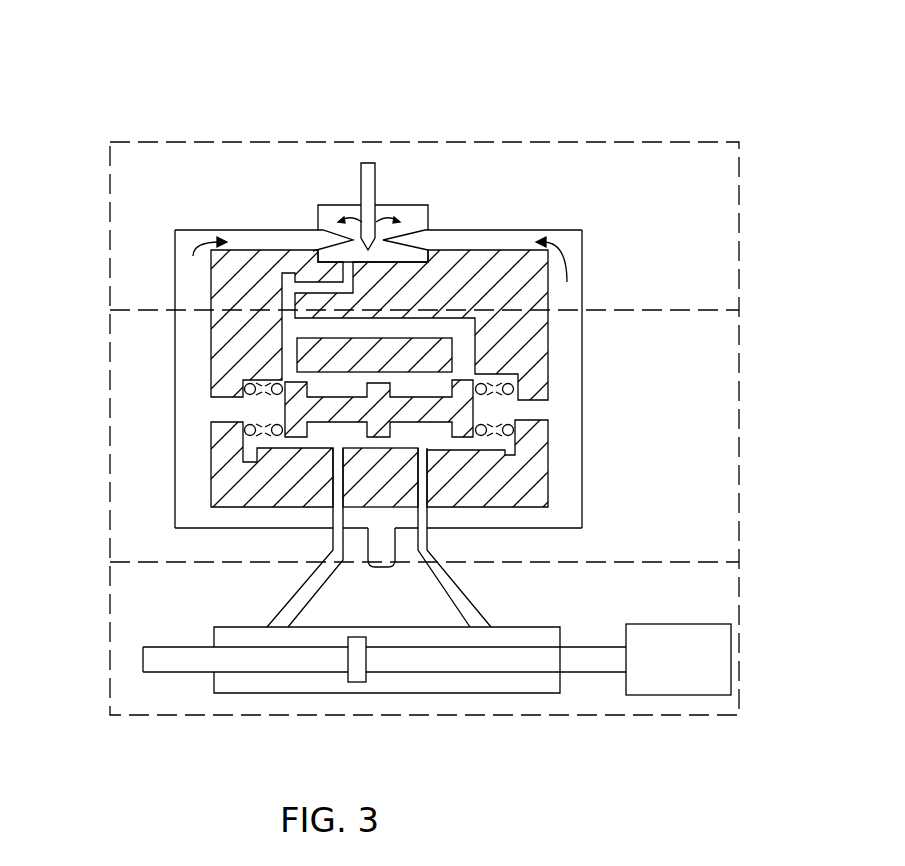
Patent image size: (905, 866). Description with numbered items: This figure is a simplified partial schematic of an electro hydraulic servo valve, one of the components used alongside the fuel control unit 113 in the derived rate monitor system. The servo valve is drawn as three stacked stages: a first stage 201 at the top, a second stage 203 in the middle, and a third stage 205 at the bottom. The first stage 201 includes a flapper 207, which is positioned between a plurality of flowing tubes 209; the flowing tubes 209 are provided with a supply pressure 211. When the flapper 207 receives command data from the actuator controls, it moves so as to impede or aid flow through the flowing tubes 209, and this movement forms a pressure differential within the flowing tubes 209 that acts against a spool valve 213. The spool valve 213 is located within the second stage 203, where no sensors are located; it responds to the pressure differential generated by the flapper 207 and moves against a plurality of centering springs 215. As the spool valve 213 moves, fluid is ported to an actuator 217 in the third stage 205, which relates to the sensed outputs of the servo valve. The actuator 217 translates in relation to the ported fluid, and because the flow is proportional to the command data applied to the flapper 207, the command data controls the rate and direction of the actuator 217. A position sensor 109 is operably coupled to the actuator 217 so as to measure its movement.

The fuel control unit 113 is at (611, 108).
The first stage 201 is at (110, 193).
The second stage 203 is at (110, 458).
The third stage 205 is at (110, 667).
The flapper 207 is at (378, 180).
The flowing tubes 209 is at (203, 230).
The supply pressure 211 is at (383, 540).
The spool valve 213 is at (392, 430).
The centering springs 215 is at (510, 374).
The actuator 217 is at (361, 690).
The position sensor 109 is at (692, 697).